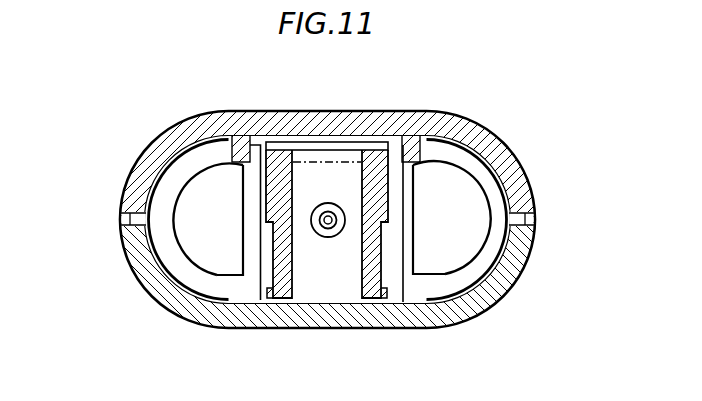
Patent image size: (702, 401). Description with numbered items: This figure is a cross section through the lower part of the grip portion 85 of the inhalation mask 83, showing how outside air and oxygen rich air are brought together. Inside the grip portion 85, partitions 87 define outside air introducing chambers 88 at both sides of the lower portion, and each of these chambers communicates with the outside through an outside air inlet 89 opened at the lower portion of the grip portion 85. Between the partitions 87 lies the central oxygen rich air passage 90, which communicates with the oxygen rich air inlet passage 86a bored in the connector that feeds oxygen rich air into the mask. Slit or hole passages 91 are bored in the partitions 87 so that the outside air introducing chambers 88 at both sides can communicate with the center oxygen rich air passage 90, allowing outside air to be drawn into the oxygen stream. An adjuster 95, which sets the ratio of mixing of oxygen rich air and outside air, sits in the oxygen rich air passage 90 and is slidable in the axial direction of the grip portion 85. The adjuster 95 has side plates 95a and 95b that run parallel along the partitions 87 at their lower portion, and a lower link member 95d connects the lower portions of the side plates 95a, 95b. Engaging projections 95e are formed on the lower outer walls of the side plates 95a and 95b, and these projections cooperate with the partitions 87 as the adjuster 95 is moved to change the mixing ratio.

The inhalation mask 83 is at (347, 84).
The grip portion 85 is at (497, 126).
The oxygen rich air inlet passage 86a is at (328, 222).
The partitions 87 is at (227, 322).
The outside air introducing chambers 88 is at (168, 183).
The outside air inlets 89 is at (198, 250).
The oxygen rich air passage 90 is at (308, 290).
The slit or hole passages 91 is at (260, 272).
The adjuster 95 is at (347, 200).
The side plate 95a is at (273, 297).
The side plate 95b is at (376, 298).
The lower link member 95d is at (323, 147).
The engaging projections 95e is at (266, 176).